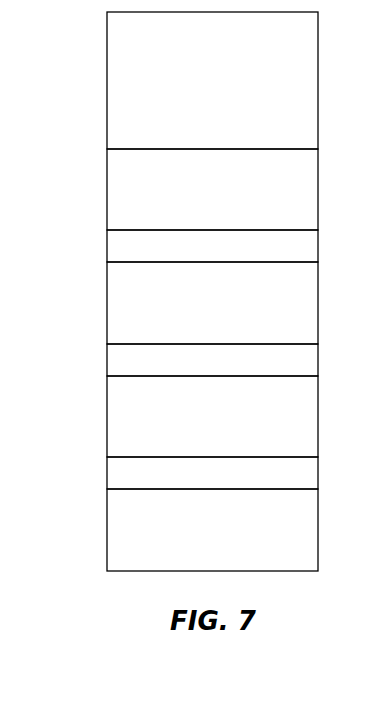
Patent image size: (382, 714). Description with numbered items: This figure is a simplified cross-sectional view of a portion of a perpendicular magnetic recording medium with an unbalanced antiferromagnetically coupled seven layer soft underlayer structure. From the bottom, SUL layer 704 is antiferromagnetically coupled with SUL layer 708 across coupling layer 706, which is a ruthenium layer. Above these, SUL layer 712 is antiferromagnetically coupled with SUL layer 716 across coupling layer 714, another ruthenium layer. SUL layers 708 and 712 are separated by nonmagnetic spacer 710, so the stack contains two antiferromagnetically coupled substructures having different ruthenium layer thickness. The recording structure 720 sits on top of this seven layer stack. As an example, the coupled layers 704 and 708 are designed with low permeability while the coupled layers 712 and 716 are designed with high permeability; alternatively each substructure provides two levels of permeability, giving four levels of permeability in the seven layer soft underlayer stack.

The recording structure 720 is at (107, 82).
The SUL layer 716 is at (107, 192).
The coupling layer 714 is at (107, 248).
The SUL layer 712 is at (107, 304).
The nonmagnetic spacer 710 is at (107, 361).
The SUL layer 708 is at (107, 417).
The coupling layer 706 is at (107, 474).
The SUL layer 704 is at (107, 531).